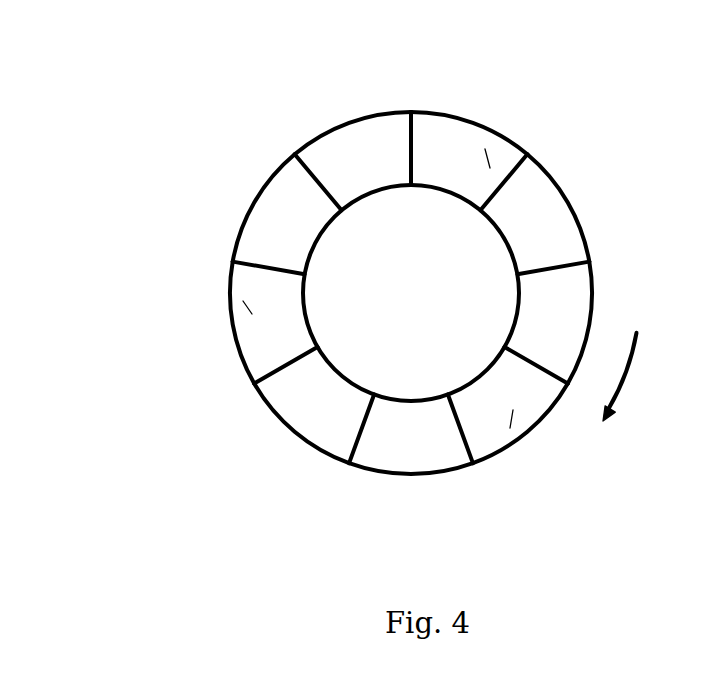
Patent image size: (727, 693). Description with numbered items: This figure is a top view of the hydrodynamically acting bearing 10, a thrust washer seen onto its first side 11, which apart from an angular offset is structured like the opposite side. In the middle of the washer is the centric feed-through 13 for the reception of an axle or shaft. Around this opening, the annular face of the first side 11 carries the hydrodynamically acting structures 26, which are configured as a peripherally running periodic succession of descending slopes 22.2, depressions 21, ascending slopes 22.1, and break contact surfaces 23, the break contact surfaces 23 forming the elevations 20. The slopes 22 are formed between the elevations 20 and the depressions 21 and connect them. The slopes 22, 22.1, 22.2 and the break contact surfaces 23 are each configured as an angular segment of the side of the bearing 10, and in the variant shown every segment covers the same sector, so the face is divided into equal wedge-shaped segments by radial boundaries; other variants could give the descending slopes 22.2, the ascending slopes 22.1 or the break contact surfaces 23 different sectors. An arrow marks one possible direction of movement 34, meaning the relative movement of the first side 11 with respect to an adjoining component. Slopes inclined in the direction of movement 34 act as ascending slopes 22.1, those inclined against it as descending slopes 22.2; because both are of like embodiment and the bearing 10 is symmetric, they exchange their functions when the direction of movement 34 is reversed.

The hydrodynamically acting bearing 10 is at (90, 105).
The first side 11 is at (255, 242).
The centric feed-through 13 is at (421, 215).
The elevations 20 is at (467, 143).
The depressions 21 is at (293, 153).
The slopes 22 is at (357, 140).
The ascending slopes 22.1 is at (532, 185).
The descending slopes 22.2 is at (568, 290).
The break contact surfaces 23 is at (490, 168).
The hydrodynamically acting structures 26 is at (601, 140).
The direction of movement 34 is at (623, 383).